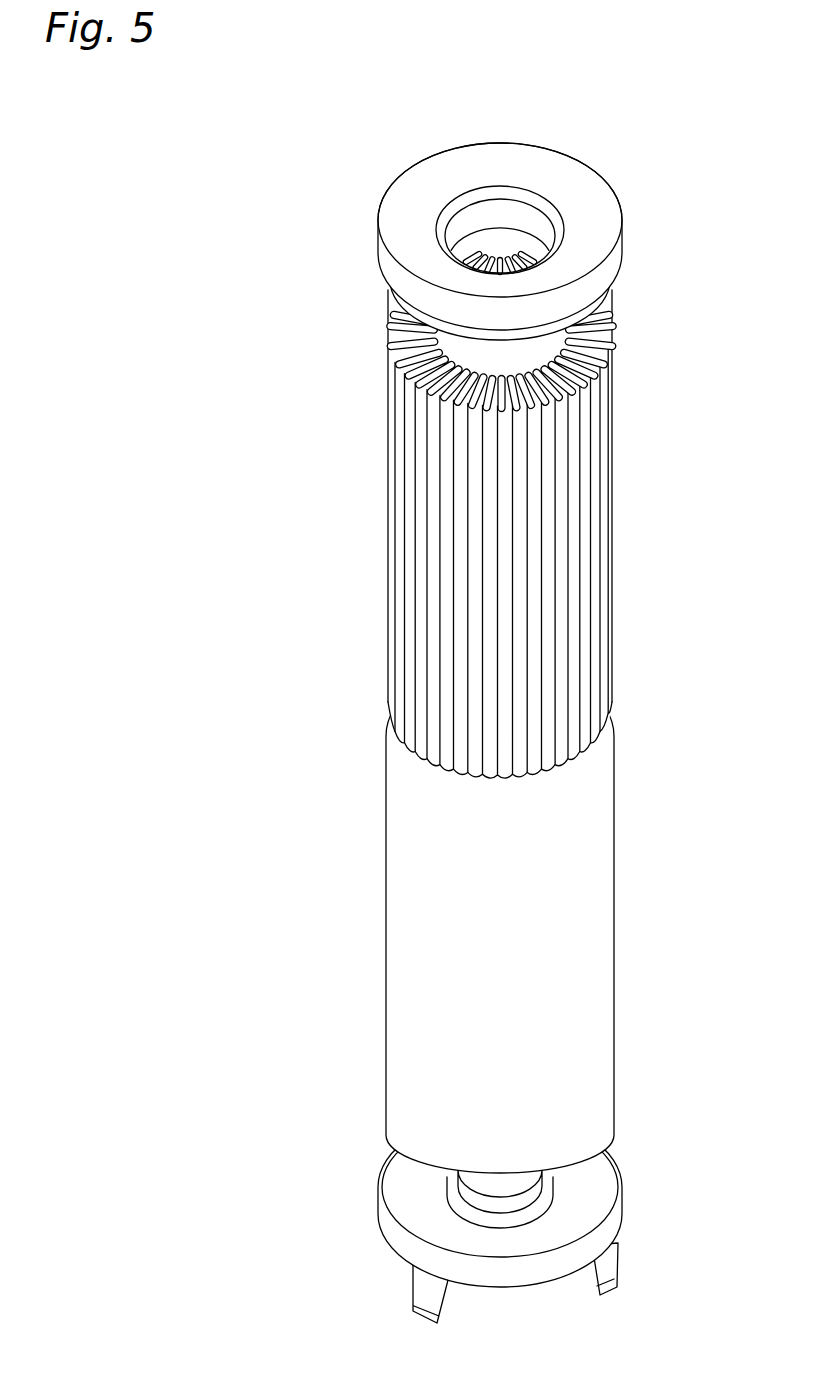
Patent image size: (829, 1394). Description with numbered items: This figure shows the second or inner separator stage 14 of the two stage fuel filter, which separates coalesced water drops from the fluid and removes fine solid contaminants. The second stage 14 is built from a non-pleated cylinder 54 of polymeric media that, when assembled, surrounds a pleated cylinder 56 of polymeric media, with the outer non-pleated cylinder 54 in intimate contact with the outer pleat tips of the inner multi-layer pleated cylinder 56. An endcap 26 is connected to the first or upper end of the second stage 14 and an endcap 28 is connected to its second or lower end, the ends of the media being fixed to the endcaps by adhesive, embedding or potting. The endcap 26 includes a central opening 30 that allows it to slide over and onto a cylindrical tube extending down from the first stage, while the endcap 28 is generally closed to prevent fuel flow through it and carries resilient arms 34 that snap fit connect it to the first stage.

The second stage 14 is at (590, 717).
The endcap 26 is at (597, 178).
The endcap 28 is at (617, 1184).
The central opening 30 is at (503, 237).
The resilient arms 34 is at (615, 1263).
The non-pleated cylinder 54 is at (614, 946).
The pleated cylinder 56 is at (613, 463).